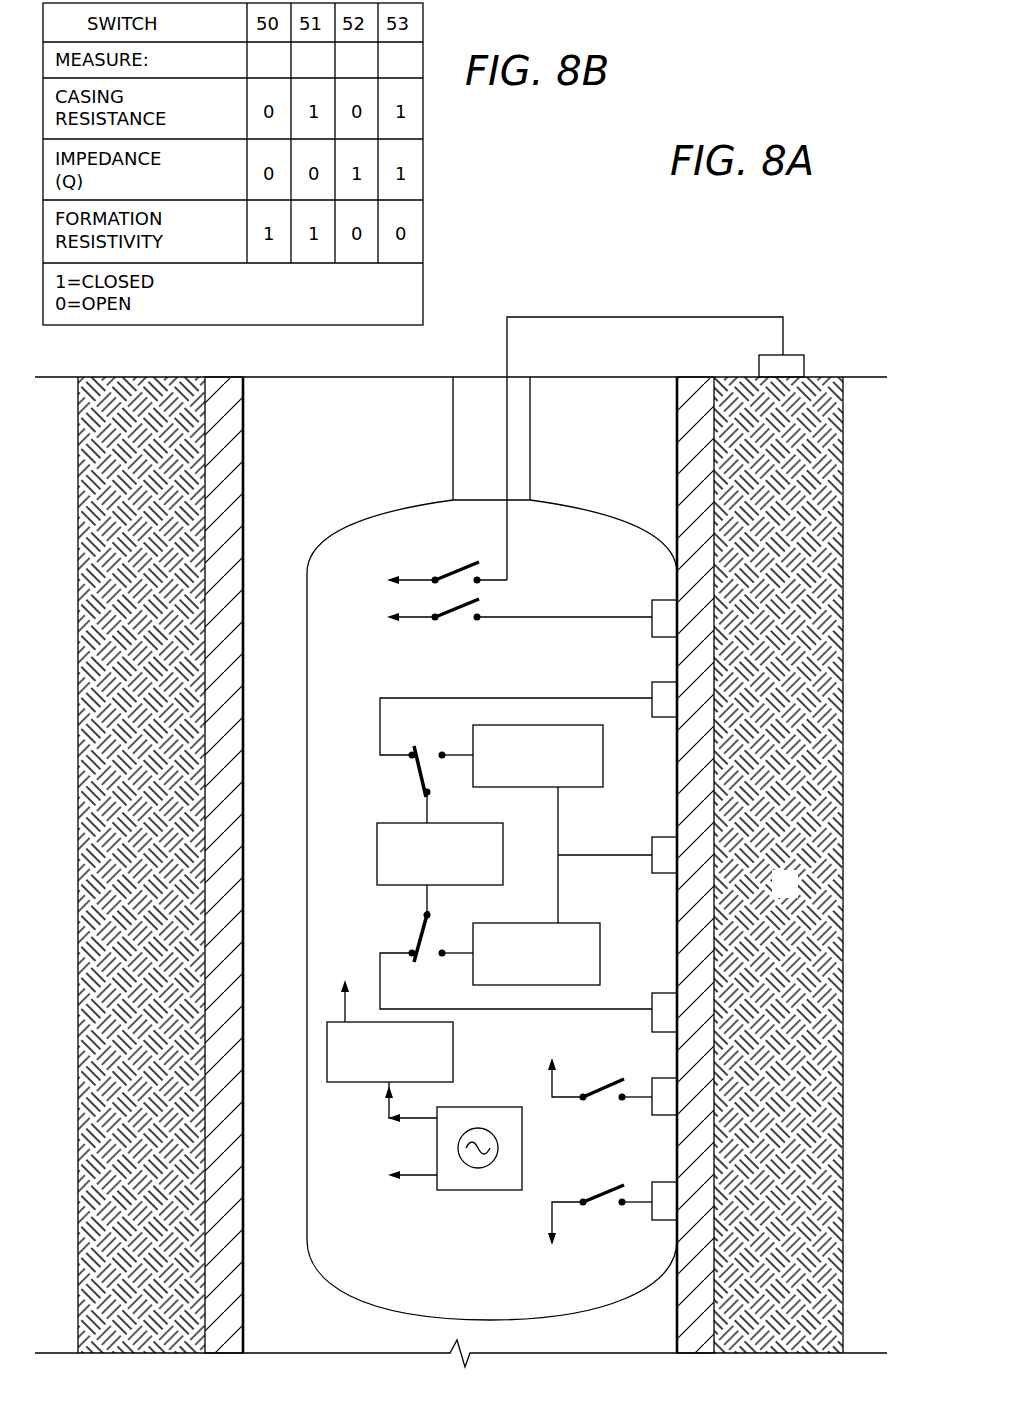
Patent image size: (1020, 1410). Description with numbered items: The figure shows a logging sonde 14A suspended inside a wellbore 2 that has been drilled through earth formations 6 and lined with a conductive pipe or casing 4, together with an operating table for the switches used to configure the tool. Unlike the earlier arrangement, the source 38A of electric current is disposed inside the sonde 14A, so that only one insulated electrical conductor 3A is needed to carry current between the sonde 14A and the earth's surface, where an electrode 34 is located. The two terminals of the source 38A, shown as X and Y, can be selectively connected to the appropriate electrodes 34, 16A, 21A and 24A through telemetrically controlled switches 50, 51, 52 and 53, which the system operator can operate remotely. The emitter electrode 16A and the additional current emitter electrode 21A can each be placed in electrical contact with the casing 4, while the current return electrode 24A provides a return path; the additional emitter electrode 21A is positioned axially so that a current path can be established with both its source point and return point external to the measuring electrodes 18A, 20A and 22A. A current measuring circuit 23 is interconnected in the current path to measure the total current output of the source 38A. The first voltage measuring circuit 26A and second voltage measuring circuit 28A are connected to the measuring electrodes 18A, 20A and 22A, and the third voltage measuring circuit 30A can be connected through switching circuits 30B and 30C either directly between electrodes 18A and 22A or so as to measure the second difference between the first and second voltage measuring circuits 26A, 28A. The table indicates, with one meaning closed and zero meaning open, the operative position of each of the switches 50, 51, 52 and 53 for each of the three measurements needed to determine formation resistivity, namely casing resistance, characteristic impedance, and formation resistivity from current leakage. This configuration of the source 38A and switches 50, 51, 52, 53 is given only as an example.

The wellbore 2 is at (715, 423).
The casing 4 is at (695, 471).
The earth formations 6 is at (793, 895).
The insulated electrical conductor 3A is at (453, 435).
The sonde 14A is at (378, 488).
The emitter electrode 16A is at (660, 598).
The measuring electrode 18A is at (665, 682).
The measuring electrode 20A is at (656, 838).
The additional current emitter electrode 21A is at (665, 1118).
The measuring electrode 22A is at (662, 1033).
The current return electrode 24A is at (662, 1222).
The current measuring circuit 23 is at (458, 1052).
The first voltage measuring circuit 26A is at (605, 757).
The second voltage measuring circuit 28A is at (603, 957).
The third voltage measuring circuit 30A is at (450, 823).
The switching circuit 30B is at (417, 775).
The switching circuit 30C is at (414, 936).
The electrode 34 is at (806, 362).
The source 38A is at (471, 1192).
The telemetrically controlled switch 50 is at (455, 570).
The telemetrically controlled switch 51 is at (455, 626).
The telemetrically controlled switch 52 is at (600, 1100).
The telemetrically controlled switch 53 is at (598, 1190).